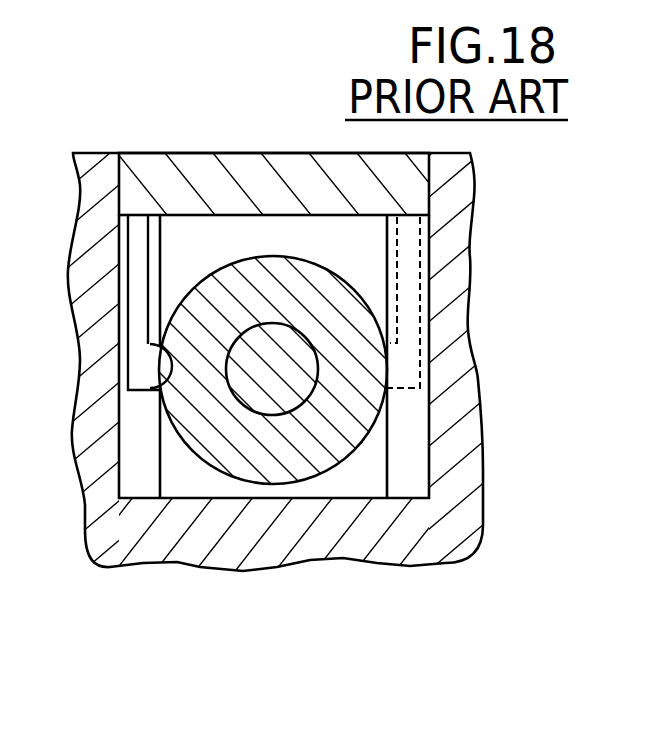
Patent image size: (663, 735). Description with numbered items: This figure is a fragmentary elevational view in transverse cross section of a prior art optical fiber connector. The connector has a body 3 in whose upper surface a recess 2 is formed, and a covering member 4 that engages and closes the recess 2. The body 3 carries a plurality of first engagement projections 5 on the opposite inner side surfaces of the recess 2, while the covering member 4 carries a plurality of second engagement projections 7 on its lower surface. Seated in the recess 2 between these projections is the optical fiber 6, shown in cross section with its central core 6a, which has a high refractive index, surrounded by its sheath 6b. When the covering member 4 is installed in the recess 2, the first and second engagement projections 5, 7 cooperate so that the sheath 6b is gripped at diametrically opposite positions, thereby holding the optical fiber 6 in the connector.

The recess 2 is at (187, 497).
The body 3 is at (188, 547).
The covering member 4 is at (262, 171).
The first engagement projections 5 is at (418, 422).
The optical fiber 6 is at (288, 464).
The core 6a is at (273, 403).
The sheath 6b is at (322, 437).
The second engagement projections 7 is at (130, 258).